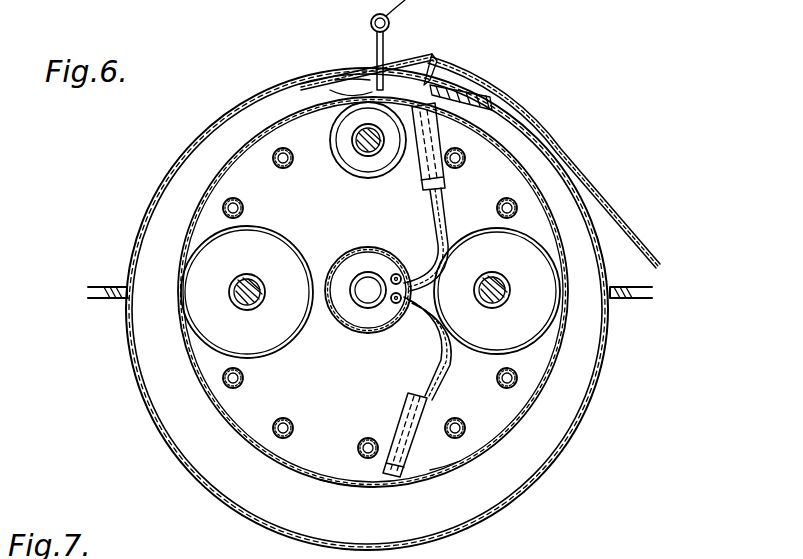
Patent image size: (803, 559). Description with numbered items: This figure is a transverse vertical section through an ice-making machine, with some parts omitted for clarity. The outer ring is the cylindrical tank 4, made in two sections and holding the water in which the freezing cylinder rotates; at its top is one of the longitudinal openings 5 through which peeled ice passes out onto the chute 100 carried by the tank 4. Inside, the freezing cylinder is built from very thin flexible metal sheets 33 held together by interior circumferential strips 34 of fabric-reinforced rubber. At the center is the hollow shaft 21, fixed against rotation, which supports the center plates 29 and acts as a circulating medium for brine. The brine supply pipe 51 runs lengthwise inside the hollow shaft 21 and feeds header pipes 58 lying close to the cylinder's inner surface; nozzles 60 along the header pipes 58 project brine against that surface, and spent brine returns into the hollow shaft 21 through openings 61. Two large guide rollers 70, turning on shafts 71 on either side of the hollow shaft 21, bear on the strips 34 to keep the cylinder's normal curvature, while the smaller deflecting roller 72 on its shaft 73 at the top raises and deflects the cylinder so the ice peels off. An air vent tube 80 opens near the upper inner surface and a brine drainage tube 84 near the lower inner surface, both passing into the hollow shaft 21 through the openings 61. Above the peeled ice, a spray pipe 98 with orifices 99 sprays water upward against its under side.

The cylindrical tank 4 is at (148, 218).
The longitudinal openings 5 is at (394, 80).
The hollow shaft 21 is at (378, 252).
The center plates 29 is at (438, 440).
The sheets 33 is at (330, 482).
The interior circumferential strips 34 is at (219, 384).
The pipe 51 is at (356, 306).
The header pipes 58 is at (285, 168).
The nozzles 60 is at (293, 152).
The openings 61 is at (336, 312).
The guide rollers 70 is at (296, 256).
The shafts 71 is at (252, 280).
The deflecting roller 72 is at (352, 162).
The shafts 73 is at (376, 152).
The air vent tube 80 is at (432, 210).
The brine drainage tube 84 is at (420, 375).
The spray pipe 98 is at (386, 38).
The orifices 99 is at (362, 75).
The chute 100 is at (628, 222).